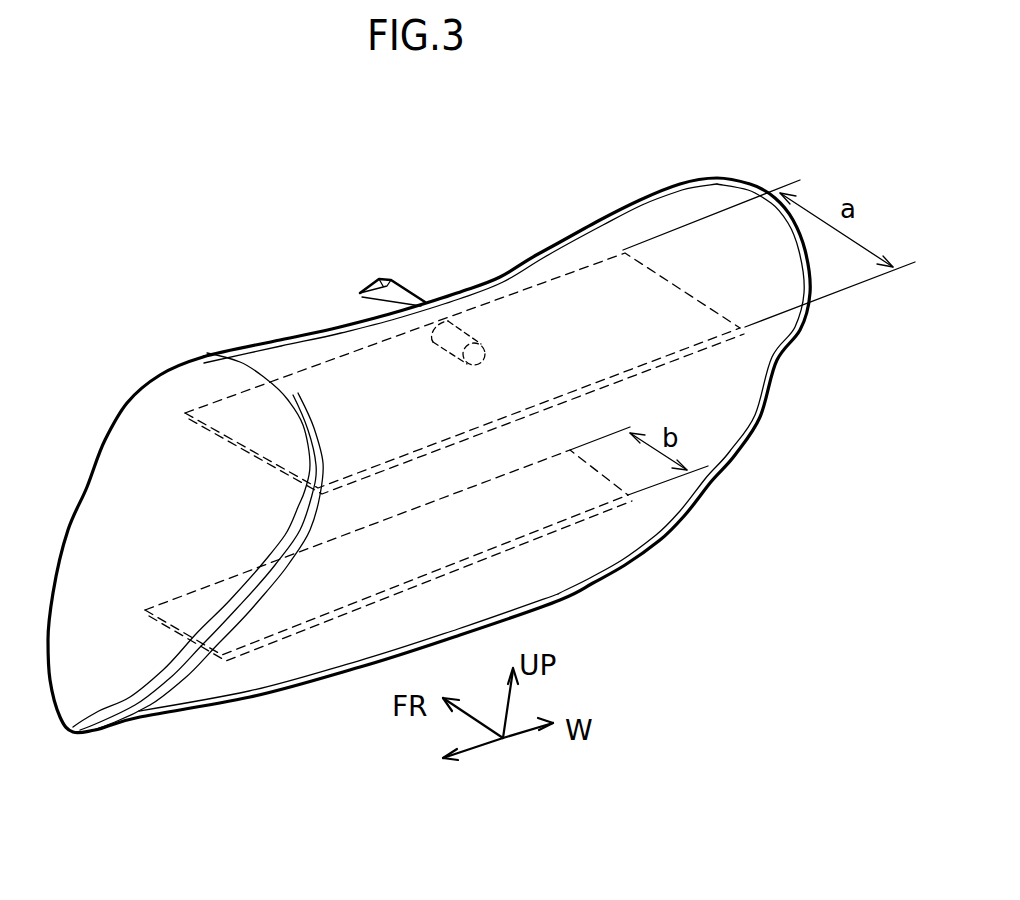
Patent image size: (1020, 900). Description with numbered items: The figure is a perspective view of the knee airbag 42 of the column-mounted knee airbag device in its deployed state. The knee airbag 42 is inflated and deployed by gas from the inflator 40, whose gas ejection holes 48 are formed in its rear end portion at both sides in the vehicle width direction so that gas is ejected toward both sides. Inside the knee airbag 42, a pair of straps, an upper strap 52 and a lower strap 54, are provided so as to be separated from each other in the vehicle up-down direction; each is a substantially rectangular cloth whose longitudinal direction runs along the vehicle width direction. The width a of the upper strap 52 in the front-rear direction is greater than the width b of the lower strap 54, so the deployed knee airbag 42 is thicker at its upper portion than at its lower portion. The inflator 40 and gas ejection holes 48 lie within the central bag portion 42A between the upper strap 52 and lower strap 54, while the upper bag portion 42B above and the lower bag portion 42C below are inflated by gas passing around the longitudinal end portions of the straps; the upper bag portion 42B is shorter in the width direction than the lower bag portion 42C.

The inflator 40 is at (407, 293).
The knee airbag 42 is at (718, 148).
The central bag portion 42A is at (717, 393).
The upper bag portion 42B is at (655, 207).
The lower bag portion 42C is at (583, 558).
The gas ejection holes 48 is at (447, 333).
The upper strap 52 is at (680, 317).
The lower strap 54 is at (650, 548).